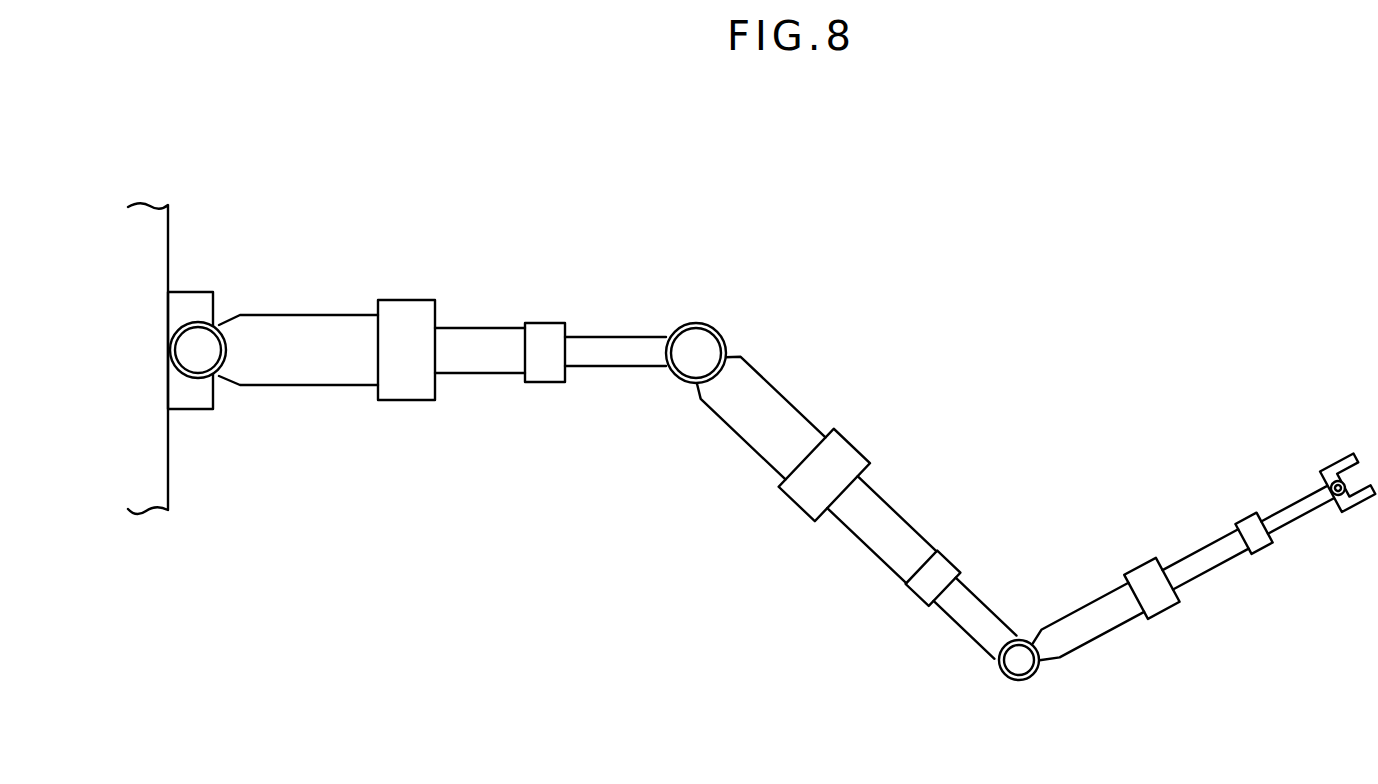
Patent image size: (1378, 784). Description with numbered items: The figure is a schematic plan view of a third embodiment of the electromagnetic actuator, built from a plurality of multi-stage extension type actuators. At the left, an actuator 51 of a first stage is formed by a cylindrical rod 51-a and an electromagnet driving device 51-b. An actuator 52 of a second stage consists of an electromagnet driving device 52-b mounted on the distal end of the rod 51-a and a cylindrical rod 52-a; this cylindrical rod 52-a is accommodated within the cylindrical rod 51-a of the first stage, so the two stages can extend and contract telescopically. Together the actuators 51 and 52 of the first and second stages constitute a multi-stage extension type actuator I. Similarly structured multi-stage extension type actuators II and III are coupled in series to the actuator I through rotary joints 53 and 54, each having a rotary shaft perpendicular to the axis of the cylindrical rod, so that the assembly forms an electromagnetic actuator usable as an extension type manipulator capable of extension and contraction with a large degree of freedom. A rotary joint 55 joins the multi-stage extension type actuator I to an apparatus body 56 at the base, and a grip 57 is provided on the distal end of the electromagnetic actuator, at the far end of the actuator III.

The actuator of a first stage 51 is at (524, 425).
The cylindrical rod 51-a is at (477, 344).
The electromagnet driving device 51-b is at (410, 313).
The actuator of a second stage 52 is at (663, 402).
The cylindrical rod 52-a is at (610, 350).
The electromagnet driving device 52-b is at (545, 337).
The rotary joint 53 is at (697, 345).
The rotary joint 54 is at (1018, 662).
The rotary joint 55 is at (199, 302).
The apparatus body 56 is at (148, 218).
The grip 57 is at (1343, 460).
The multi-stage extension type actuator I is at (663, 527).
The multi-stage extension type actuator II is at (883, 481).
The multi-stage extension type actuator III is at (1197, 595).